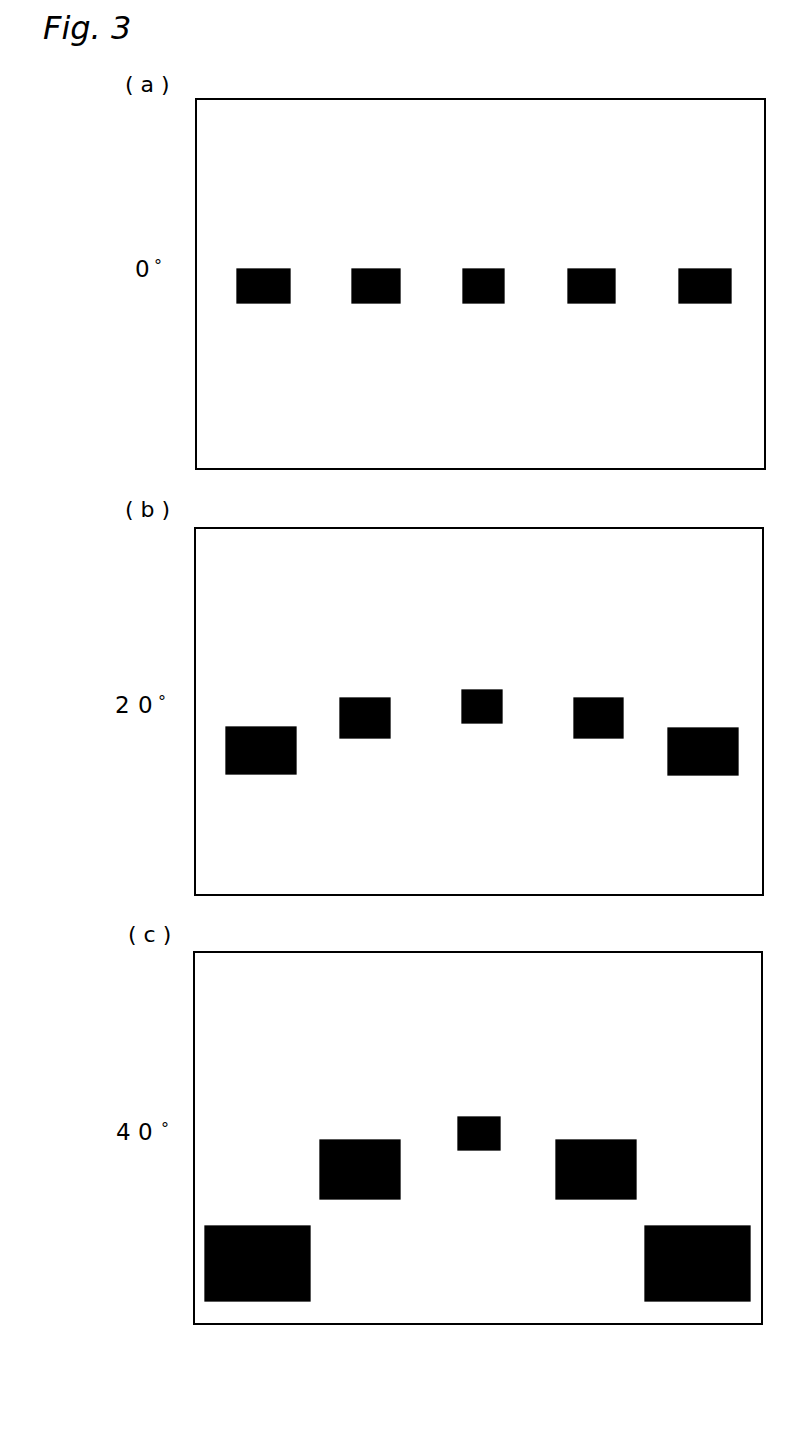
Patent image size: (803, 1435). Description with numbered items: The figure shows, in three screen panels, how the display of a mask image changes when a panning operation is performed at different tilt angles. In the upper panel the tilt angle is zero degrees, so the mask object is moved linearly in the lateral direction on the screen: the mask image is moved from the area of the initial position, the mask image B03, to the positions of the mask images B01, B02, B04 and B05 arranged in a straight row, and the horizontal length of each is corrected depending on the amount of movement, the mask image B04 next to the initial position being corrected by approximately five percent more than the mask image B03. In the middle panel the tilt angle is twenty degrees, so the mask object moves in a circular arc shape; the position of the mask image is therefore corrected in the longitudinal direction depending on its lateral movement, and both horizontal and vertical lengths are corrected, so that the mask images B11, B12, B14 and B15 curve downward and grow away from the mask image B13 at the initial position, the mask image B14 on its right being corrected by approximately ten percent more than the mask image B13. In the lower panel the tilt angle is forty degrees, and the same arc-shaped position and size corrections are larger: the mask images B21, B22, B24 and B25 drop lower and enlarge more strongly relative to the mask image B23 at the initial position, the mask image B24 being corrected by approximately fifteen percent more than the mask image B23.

The mask image B01 is at (263, 300).
The mask image B02 is at (376, 300).
The mask image B03 is at (484, 300).
The mask image B04 is at (591, 300).
The mask image B05 is at (705, 300).
The mask image B11 is at (261, 762).
The mask image B12 is at (365, 731).
The mask image B13 is at (482, 721).
The mask image B14 is at (598, 731).
The mask image B15 is at (703, 762).
The mask image B21 is at (257, 1276).
The mask image B22 is at (360, 1184).
The mask image B23 is at (479, 1148).
The mask image B24 is at (596, 1183).
The mask image B25 is at (697, 1276).